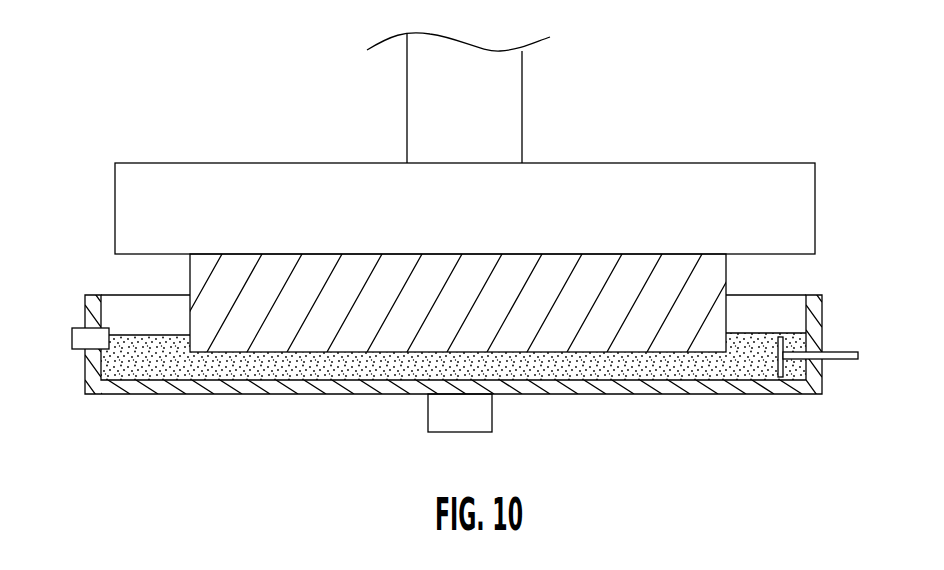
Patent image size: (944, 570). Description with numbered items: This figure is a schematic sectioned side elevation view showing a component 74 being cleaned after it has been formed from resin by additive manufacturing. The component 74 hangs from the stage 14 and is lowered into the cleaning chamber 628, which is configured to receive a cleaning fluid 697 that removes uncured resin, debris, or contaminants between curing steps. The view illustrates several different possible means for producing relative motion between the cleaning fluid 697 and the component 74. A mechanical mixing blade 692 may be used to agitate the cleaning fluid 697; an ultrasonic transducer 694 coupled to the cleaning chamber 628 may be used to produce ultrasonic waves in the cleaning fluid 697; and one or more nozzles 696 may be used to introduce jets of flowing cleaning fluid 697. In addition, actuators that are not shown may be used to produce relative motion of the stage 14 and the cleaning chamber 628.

The stage 14 is at (470, 219).
The component 74 is at (210, 279).
The cleaning chamber 628 is at (150, 373).
The mechanical mixing blade 692 is at (840, 362).
The ultrasonic transducer 694 is at (478, 425).
The nozzle 696 is at (82, 338).
The cleaning fluid 697 is at (757, 345).